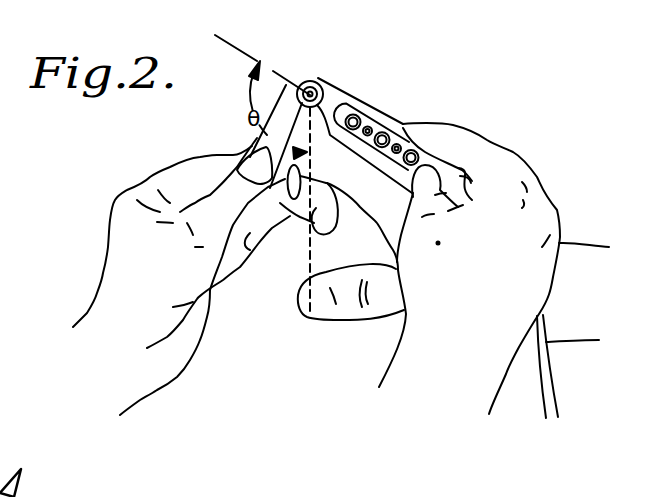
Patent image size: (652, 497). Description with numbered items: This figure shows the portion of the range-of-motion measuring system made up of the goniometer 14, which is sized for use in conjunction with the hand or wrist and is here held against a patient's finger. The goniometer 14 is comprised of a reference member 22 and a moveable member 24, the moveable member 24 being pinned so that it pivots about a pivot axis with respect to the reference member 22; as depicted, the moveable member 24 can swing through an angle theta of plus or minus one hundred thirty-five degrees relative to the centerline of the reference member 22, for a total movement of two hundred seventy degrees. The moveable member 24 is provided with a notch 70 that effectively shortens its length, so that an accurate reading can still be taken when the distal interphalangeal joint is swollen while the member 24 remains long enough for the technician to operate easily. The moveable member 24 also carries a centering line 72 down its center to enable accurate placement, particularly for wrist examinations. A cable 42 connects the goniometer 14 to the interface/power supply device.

The goniometer 14 is at (354, 96).
The reference member 22 is at (383, 116).
The moveable member 24 is at (278, 116).
The cable 42 is at (553, 377).
The notch 70 is at (300, 207).
The centering line 72 is at (285, 131).